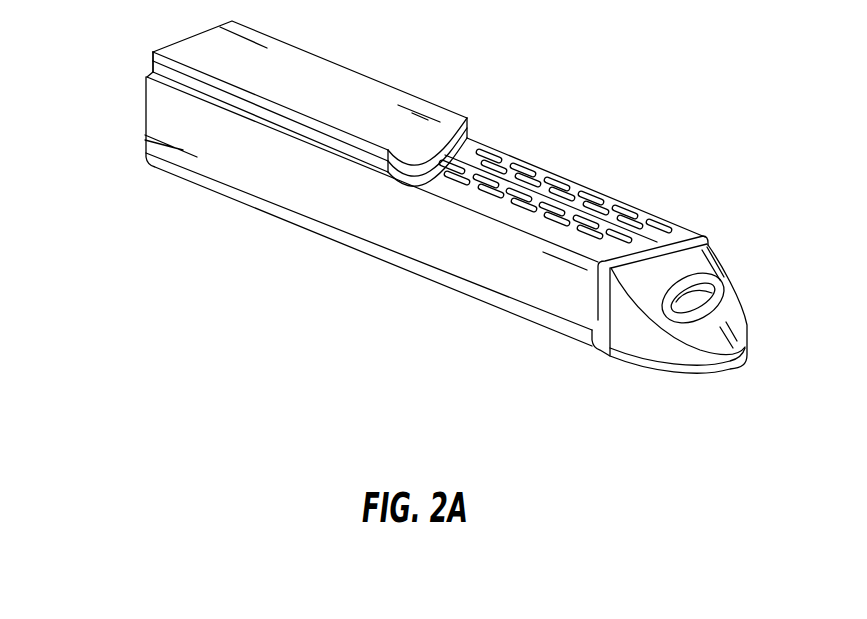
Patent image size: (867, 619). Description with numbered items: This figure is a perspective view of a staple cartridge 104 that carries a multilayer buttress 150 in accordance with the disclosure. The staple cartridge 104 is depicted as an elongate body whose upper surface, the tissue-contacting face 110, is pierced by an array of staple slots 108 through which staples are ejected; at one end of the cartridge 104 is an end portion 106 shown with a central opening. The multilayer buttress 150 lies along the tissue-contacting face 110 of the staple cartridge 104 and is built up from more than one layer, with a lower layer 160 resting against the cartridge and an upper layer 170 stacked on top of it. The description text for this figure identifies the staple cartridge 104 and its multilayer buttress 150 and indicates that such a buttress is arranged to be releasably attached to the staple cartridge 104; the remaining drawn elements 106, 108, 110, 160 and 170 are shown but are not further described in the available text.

The staple cartridge 104 is at (328, 247).
The end cap / nozzle 106 is at (675, 237).
The slots 108 is at (612, 208).
The grille / perforated top surface 110 is at (590, 167).
The cover strip 150 is at (330, 67).
The lower layer of cover 160 is at (152, 72).
The upper layer of cover 170 is at (152, 54).